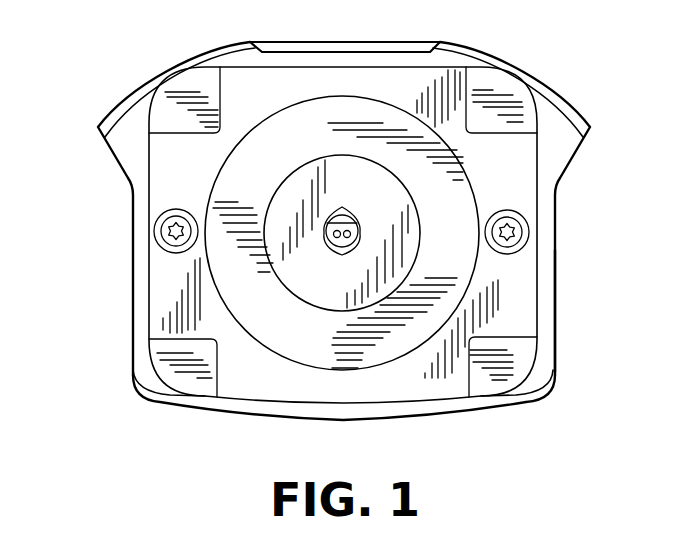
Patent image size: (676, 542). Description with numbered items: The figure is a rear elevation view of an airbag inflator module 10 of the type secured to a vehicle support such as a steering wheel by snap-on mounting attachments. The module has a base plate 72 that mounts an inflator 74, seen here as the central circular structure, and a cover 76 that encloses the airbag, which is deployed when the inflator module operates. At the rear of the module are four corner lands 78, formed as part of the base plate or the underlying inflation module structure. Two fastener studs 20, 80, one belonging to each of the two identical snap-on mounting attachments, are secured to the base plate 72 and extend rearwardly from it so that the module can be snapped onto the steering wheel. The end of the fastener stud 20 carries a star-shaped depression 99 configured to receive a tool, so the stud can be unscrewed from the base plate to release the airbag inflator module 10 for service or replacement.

The airbag inflator module 10 is at (130, 265).
The fastener stud 20 is at (154, 228).
The base plate 72 is at (517, 183).
The inflator 74 is at (368, 360).
The cover 76 is at (557, 283).
The corner lands 78 is at (197, 78).
The fastener stud 80 is at (529, 233).
The star-shaped depression 99 is at (176, 253).